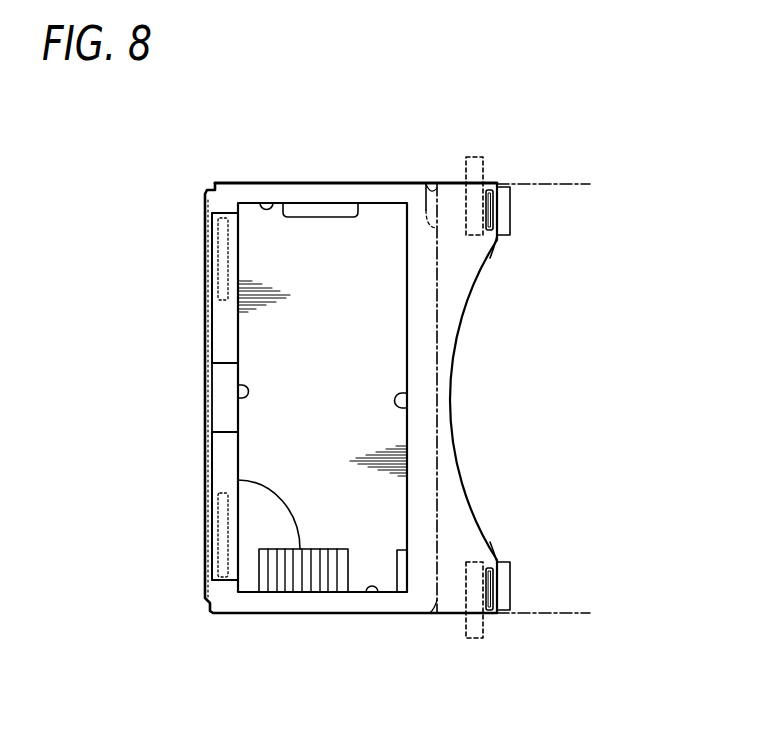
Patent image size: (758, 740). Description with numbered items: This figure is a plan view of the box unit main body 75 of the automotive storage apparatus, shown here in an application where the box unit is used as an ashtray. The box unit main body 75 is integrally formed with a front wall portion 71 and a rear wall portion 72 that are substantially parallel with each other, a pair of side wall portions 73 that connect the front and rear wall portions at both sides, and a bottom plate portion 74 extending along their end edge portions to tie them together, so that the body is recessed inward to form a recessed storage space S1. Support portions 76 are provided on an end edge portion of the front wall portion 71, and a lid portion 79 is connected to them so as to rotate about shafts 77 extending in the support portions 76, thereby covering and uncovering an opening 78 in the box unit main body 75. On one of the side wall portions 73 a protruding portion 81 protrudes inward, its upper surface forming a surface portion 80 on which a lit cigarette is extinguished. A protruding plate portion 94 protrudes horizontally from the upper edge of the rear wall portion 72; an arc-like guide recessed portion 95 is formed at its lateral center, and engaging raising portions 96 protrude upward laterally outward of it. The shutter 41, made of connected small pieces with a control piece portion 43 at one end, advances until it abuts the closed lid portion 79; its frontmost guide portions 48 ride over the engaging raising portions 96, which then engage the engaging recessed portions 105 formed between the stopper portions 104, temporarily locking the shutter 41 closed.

The shutter 41 is at (564, 172).
The control piece portion 43 is at (427, 184).
The guide portions 48 is at (476, 157).
The front wall portion 71 is at (240, 391).
The rear wall portion 72 is at (407, 400).
The side wall portions 73 is at (266, 203).
The bottom plate portion 74 is at (367, 497).
The box unit main body 75 is at (231, 172).
The support portions 76 is at (220, 334).
The shafts 77 is at (221, 257).
The opening 78 is at (318, 235).
The lid portion 79 is at (438, 356).
The surface portion 80 is at (300, 549).
The protruding portion 81 is at (238, 480).
The protruding plate portion 94 is at (472, 283).
The guide recessed portion 95 is at (456, 447).
The engaging raising portions 96 is at (492, 188).
The stopper portions 104 is at (512, 226).
The engaging recessed portions 105 is at (497, 255).
The recessed storage space S1 is at (373, 256).